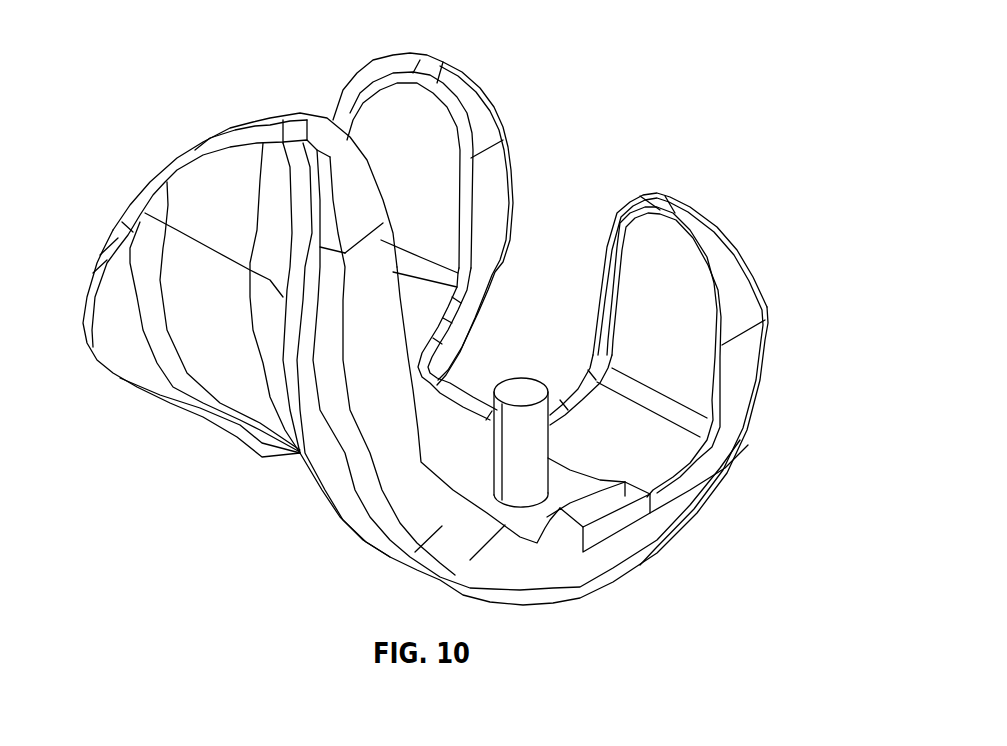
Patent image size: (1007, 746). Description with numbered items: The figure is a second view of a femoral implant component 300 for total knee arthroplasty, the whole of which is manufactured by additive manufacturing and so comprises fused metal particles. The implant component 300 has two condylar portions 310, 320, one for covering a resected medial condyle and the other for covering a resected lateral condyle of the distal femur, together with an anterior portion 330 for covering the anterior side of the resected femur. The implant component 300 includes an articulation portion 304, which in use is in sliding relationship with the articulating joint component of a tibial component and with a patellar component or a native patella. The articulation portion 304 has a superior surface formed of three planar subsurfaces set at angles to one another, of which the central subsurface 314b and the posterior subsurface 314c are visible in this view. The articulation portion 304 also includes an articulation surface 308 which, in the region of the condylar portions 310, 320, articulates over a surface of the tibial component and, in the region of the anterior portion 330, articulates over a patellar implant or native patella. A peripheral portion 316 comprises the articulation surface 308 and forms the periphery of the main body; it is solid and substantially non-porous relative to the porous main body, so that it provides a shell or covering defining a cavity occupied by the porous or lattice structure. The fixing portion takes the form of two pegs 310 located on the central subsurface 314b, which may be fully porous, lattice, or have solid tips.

The femoral implant component 300 is at (597, 137).
The articulation portion 304 is at (527, 443).
The articulation surface 308 is at (247, 323).
The condylar portion 310 is at (497, 75).
The central subsurface 314b is at (417, 297).
The posterior subsurface 314c is at (373, 125).
The peripheral portion 316 is at (442, 527).
The condylar portion 320 is at (750, 220).
The anterior portion 330 is at (222, 475).